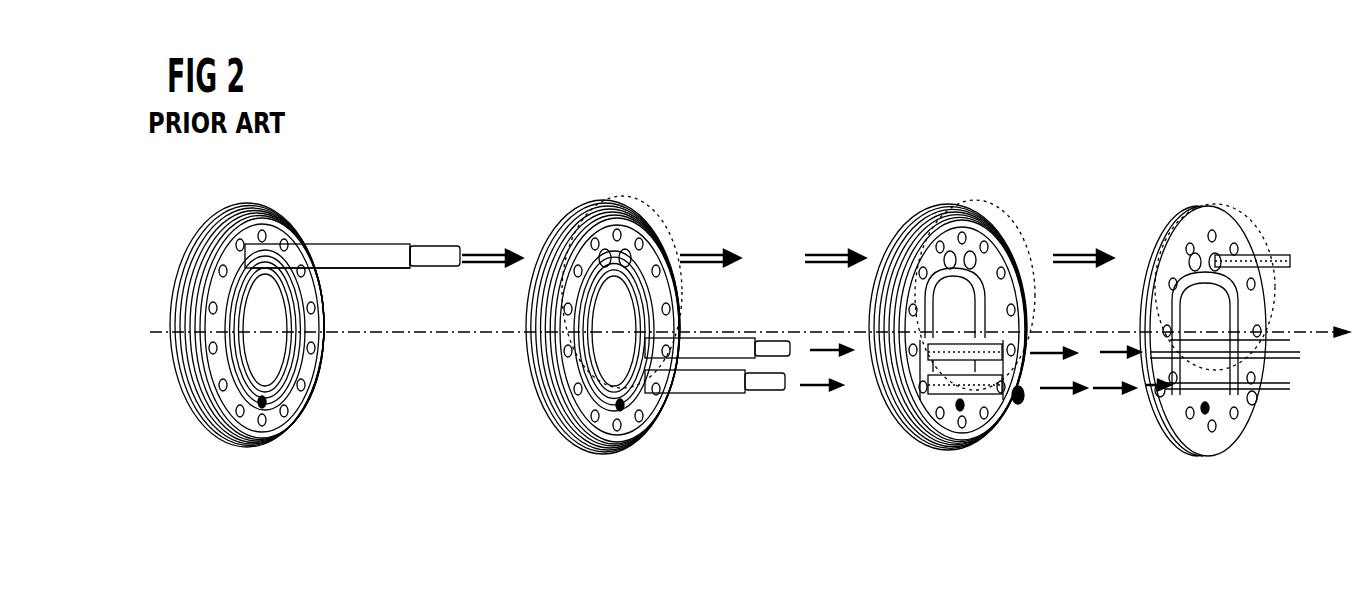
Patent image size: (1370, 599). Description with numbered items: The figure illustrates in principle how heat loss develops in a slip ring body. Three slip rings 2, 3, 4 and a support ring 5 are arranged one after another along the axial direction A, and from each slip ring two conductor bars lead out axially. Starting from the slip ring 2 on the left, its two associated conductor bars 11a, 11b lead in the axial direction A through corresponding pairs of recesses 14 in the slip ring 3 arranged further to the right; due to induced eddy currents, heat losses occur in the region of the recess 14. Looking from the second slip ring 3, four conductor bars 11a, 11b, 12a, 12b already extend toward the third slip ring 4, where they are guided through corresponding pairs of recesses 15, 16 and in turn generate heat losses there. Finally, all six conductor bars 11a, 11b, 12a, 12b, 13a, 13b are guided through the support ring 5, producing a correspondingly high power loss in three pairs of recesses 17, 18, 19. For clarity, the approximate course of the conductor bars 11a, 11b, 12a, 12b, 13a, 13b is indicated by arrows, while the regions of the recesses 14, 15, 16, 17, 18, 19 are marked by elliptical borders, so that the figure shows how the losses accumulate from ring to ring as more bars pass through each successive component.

The slip ring 2 is at (278, 202).
The slip ring 3 is at (628, 202).
The slip ring 4 is at (975, 206).
The support ring 5 is at (1185, 250).
The conductor bar 11a is at (415, 243).
The conductor bar 11b is at (355, 270).
The conductor bar 12a is at (723, 338).
The conductor bar 12b is at (720, 394).
The conductor bar 13a is at (896, 415).
The conductor bar 13b is at (992, 425).
The recess 14 is at (660, 210).
The recess 15 is at (1005, 212).
The recess 16 is at (1022, 405).
The recess 17 is at (1255, 212).
The recess 18 is at (1258, 405).
The recess 19 is at (1155, 395).
The axial direction A is at (1318, 337).